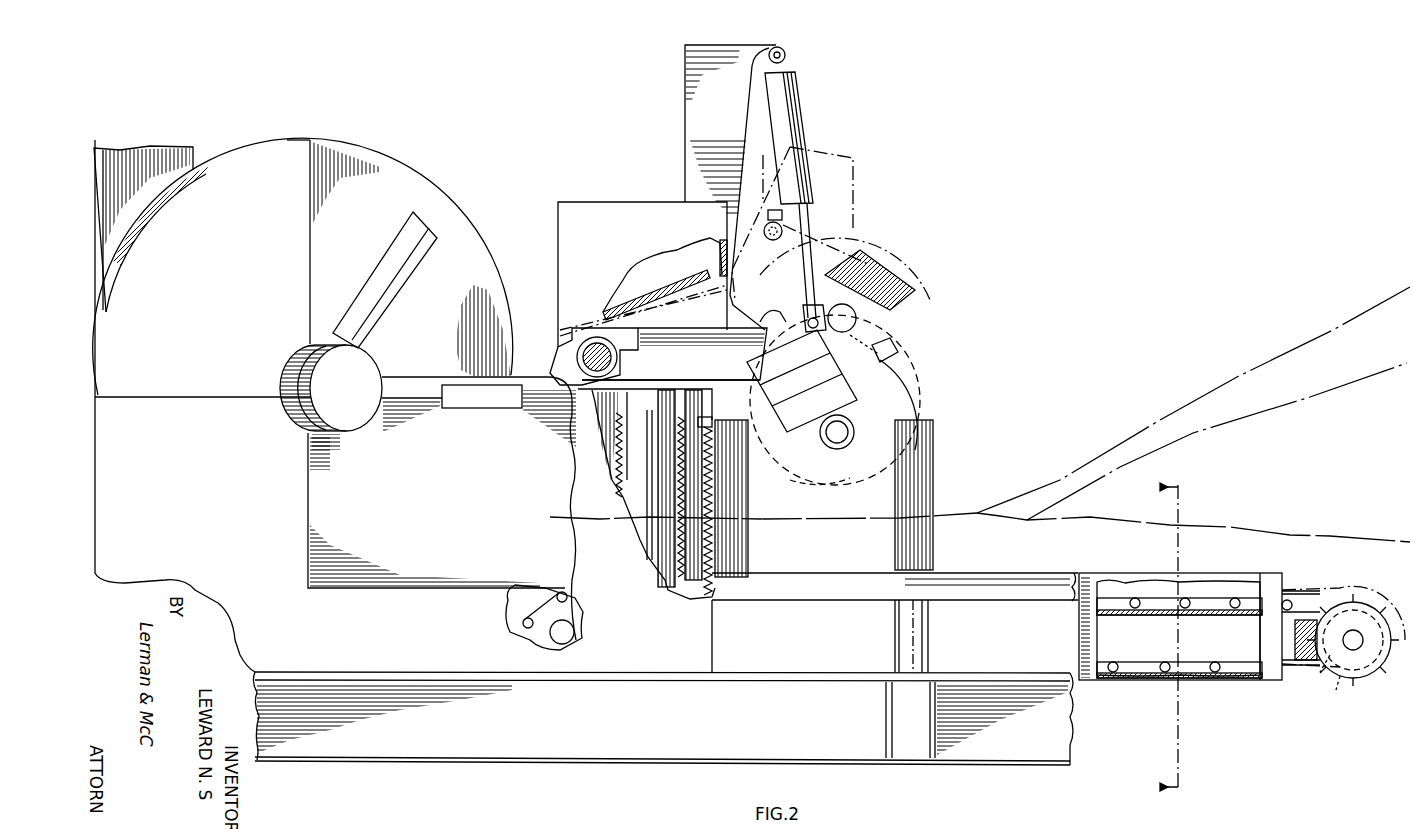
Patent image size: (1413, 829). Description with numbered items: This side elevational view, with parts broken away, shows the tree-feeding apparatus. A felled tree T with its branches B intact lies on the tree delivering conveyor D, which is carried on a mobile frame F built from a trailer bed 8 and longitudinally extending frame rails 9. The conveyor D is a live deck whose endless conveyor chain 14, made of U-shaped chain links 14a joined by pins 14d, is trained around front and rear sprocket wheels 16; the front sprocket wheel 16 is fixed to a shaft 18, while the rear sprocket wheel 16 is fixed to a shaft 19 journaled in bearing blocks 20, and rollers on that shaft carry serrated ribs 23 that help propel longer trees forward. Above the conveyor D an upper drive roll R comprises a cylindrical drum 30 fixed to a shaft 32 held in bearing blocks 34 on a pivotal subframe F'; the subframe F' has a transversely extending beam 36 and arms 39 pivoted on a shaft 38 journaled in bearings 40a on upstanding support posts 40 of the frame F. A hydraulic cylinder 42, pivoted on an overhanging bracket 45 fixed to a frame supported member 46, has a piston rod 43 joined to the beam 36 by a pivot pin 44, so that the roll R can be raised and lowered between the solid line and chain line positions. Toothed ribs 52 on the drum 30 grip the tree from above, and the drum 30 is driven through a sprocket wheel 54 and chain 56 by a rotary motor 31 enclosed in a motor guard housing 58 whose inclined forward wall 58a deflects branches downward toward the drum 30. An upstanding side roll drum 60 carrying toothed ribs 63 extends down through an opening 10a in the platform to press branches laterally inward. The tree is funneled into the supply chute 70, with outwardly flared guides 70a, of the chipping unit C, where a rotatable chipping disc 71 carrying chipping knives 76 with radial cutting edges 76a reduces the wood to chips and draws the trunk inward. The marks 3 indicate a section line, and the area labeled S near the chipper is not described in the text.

The log chipping unit C is at (468, 226).
The saw guard panel S is at (150, 194).
The rotatable chipping disc 71 is at (361, 232).
The radial cutting edges 76a is at (354, 306).
The chipping knives 76 is at (378, 300).
The shaft 38 is at (554, 356).
The supply chute 70 is at (452, 504).
The outwardly flared guides 70a is at (558, 506).
The cylindrical drum 60 is at (638, 498).
The serrated ribs 63 is at (666, 574).
The sprocket wheels 16 is at (564, 604).
The shaft 18 is at (566, 636).
The upstanding support posts 40 is at (628, 660).
The bearings 40a is at (626, 360).
The arms 39 is at (720, 374).
The openings 10a is at (718, 590).
The frame supported member 46 is at (636, 236).
The pivotal subframe F' is at (605, 175).
The overhanging bracket 45 is at (768, 50).
The hydraulic cylinder 42 is at (800, 100).
The piston rod 43 is at (810, 226).
The rotary motor 31 is at (780, 312).
The motor guard housing 58 is at (734, 322).
The pivot pin 44 is at (856, 316).
The forward wall 58a is at (917, 298).
The chain 56 is at (876, 350).
The drive roll R is at (902, 378).
The serrated ribs 52 is at (912, 378).
The cylindrical drum 30 is at (916, 392).
The transversely extending beam 36 is at (802, 381).
The bearing blocks 34 is at (832, 446).
The shaft 32 is at (836, 450).
The sprocket wheel 54 is at (910, 478).
The tree T is at (983, 505).
The branches B is at (1208, 402).
The section line 3- 3 is at (1154, 637).
The tree delivering conveyor D is at (1208, 548).
The endless conveyor chain 14 is at (1210, 592).
The chain links 14a is at (1212, 612).
The pins 14d is at (1216, 670).
The trailer bed 8 is at (1264, 678).
The frame rails 9 is at (1068, 722).
The shaft 19 is at (1345, 640).
The bearing blocks 20 is at (1338, 668).
The serrated ribs 23 is at (1366, 676).
The mobile frame F is at (261, 482).